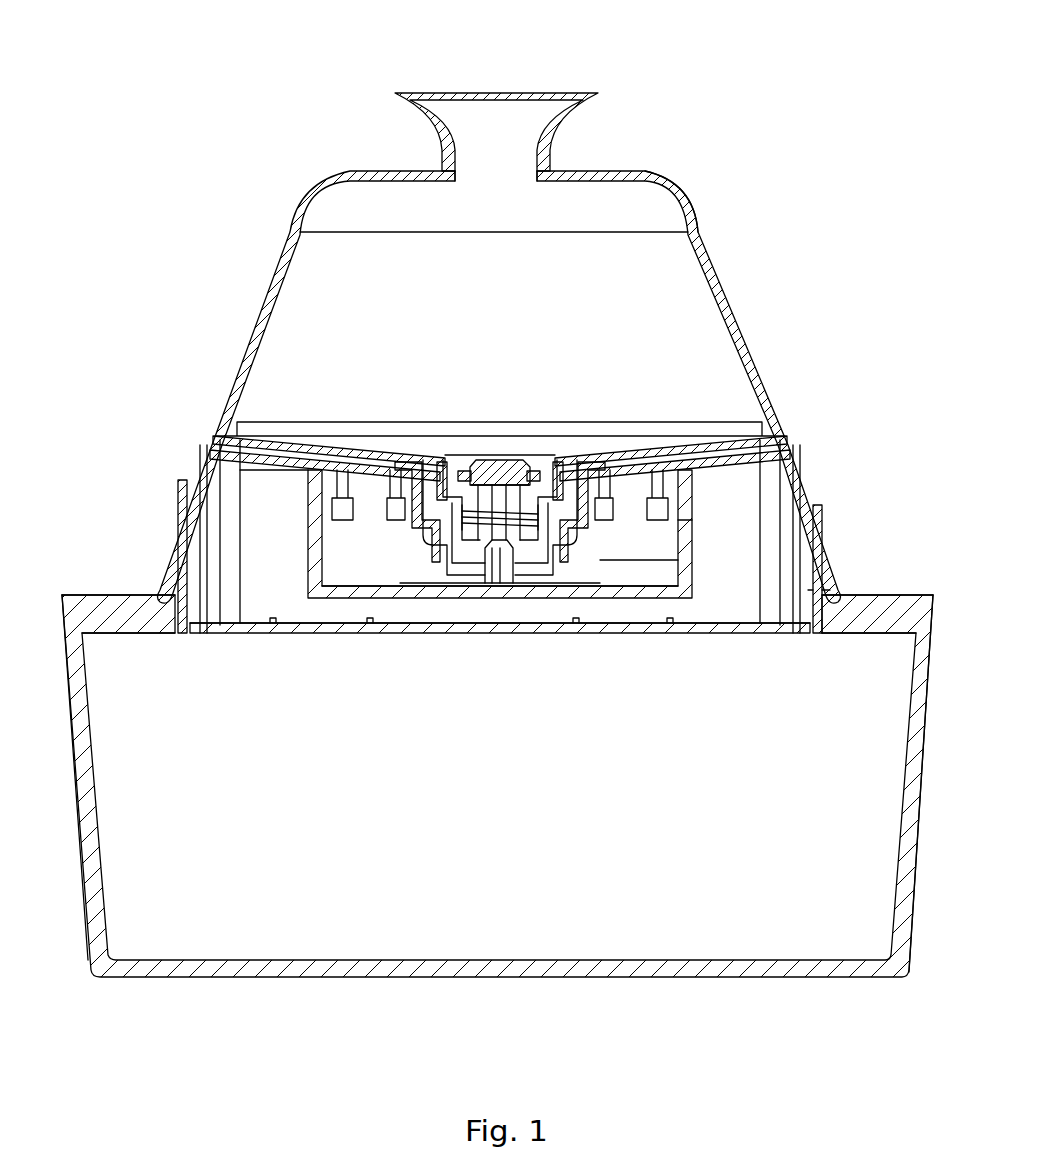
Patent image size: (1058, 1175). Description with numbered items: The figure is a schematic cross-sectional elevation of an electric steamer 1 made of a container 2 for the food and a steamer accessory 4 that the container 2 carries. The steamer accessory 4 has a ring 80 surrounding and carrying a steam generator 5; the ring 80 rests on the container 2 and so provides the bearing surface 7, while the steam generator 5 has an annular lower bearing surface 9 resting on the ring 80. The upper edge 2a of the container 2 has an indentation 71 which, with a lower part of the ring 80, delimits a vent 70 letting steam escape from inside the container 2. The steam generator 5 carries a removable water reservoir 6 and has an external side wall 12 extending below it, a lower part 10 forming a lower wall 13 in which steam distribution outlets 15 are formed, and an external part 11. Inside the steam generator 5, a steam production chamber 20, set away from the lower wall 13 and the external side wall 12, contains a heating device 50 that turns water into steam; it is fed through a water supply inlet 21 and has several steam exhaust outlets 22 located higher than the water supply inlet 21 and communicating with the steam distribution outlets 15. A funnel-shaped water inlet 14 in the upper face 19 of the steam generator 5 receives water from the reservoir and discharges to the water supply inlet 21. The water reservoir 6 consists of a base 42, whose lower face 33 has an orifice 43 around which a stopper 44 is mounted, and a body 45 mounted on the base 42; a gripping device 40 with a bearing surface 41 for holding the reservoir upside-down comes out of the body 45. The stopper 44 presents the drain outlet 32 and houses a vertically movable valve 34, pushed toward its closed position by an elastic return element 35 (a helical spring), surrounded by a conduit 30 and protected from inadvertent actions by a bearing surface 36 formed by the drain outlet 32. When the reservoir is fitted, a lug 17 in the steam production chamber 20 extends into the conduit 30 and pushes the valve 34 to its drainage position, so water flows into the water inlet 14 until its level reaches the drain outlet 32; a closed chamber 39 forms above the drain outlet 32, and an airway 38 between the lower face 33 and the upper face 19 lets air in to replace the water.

The electric steamer 1 is at (203, 1084).
The container 2 is at (832, 972).
The upper edge of the container 2a is at (80, 600).
The steamer accessory 4 is at (162, 428).
The steam generator 5 is at (236, 489).
The water reservoir 6 is at (293, 327).
The bearing surface 7 is at (74, 664).
The annular lower bearing surface 9 is at (160, 600).
The lower part of the steam generator 10 is at (407, 640).
The external part of the steam generator 11 is at (828, 550).
The external side wall 12 is at (165, 560).
The lower wall 13 is at (553, 633).
The water inlet 14 is at (562, 475).
The steam distribution outlet 15 is at (277, 633).
The lug 17 is at (481, 600).
The upper face of the steam generator 19 is at (645, 475).
The steam production chamber 20 is at (657, 533).
The water supply inlet 21 is at (450, 600).
The steam exhaust outlet 22 is at (390, 475).
The conduit 30 is at (655, 535).
The drain outlet 32 is at (462, 575).
The lower face of the water reservoir 33 is at (415, 528).
The valve 34 is at (546, 470).
The elastic return element 35 is at (480, 475).
The bearing surface 36 is at (512, 582).
The airway 38 is at (772, 458).
The closed chamber 39 is at (510, 292).
The gripping device 40 is at (545, 143).
The bearing surface 41 is at (545, 93).
The base 42 is at (212, 440).
The orifice 43 is at (445, 475).
The stopper 44 is at (598, 475).
The body 45 is at (677, 190).
The heating device 50 is at (323, 598).
The vent 70 is at (920, 606).
The indentation 71 is at (924, 694).
The ring 80 is at (897, 610).